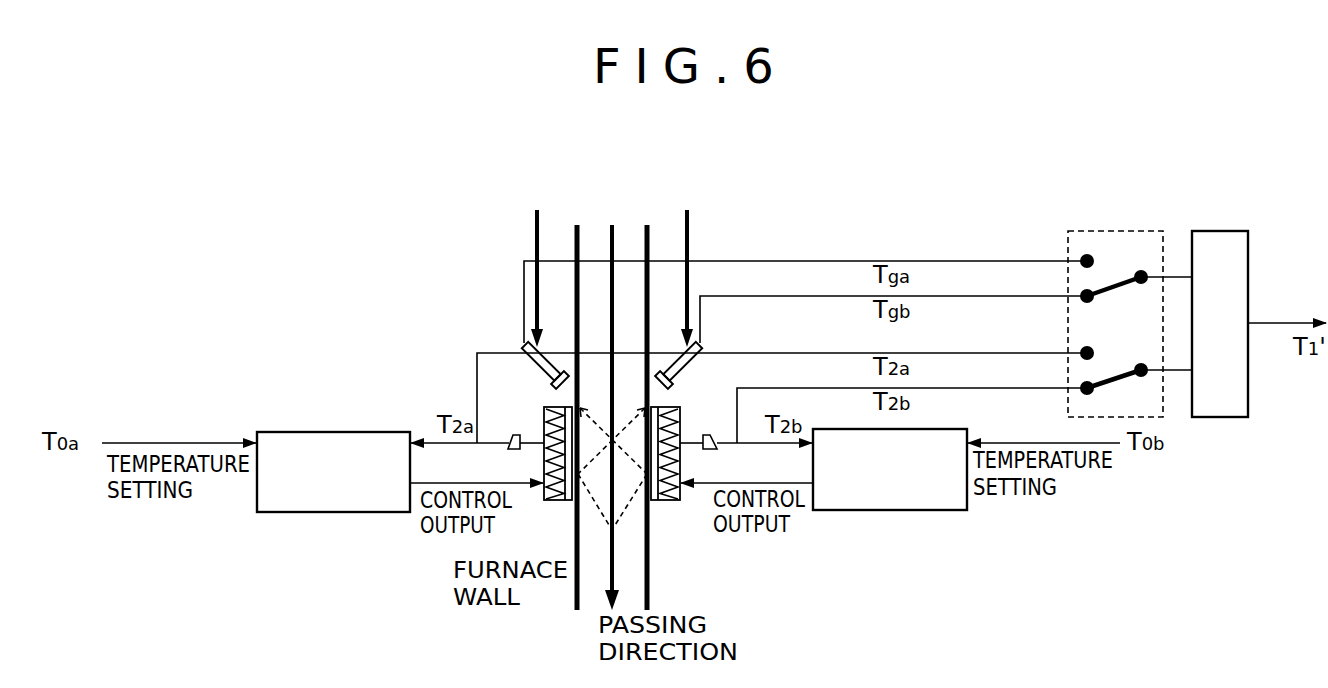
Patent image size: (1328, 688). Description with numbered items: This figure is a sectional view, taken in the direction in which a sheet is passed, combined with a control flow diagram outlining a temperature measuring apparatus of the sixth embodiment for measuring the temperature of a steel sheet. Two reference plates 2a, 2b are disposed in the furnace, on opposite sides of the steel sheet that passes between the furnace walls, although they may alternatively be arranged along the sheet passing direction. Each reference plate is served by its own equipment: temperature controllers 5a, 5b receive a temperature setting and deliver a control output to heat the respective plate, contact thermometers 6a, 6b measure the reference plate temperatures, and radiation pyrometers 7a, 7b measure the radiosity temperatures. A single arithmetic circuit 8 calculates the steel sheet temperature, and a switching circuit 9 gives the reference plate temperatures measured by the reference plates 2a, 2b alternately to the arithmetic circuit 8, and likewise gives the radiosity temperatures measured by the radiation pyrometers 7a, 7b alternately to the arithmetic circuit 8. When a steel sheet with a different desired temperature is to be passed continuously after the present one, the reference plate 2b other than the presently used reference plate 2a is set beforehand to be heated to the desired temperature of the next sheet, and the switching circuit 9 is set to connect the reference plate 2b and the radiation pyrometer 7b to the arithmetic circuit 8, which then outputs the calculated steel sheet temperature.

The reference plate 2a is at (569, 501).
The reference plate 2b is at (658, 501).
The temperature controller 5a is at (335, 513).
The temperature controller 5b is at (890, 511).
The contact thermometer 6a is at (526, 440).
The contact thermometer 6b is at (707, 432).
The radiation pyrometer 7a is at (544, 286).
The radiation pyrometer 7b is at (680, 286).
The arithmetic circuit 8 is at (1215, 231).
The switching circuit 9 is at (1115, 231).